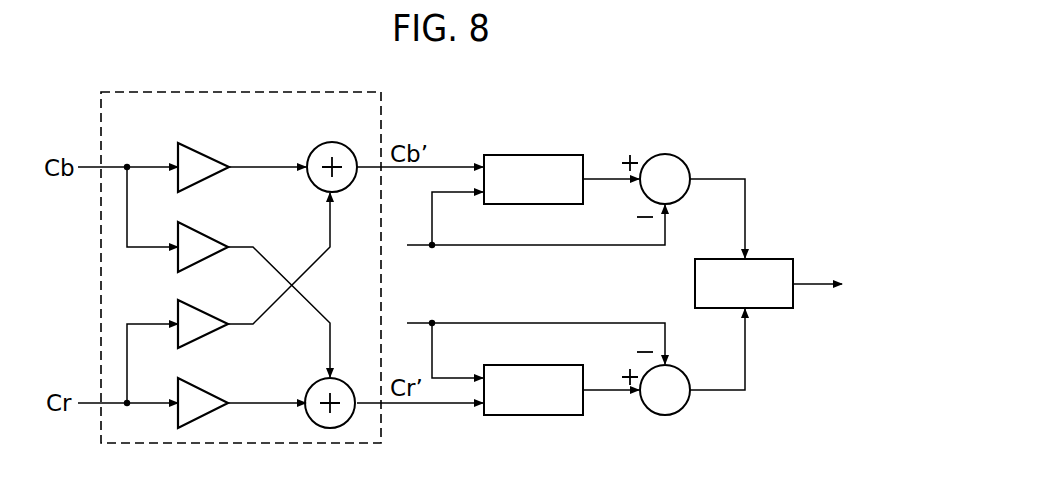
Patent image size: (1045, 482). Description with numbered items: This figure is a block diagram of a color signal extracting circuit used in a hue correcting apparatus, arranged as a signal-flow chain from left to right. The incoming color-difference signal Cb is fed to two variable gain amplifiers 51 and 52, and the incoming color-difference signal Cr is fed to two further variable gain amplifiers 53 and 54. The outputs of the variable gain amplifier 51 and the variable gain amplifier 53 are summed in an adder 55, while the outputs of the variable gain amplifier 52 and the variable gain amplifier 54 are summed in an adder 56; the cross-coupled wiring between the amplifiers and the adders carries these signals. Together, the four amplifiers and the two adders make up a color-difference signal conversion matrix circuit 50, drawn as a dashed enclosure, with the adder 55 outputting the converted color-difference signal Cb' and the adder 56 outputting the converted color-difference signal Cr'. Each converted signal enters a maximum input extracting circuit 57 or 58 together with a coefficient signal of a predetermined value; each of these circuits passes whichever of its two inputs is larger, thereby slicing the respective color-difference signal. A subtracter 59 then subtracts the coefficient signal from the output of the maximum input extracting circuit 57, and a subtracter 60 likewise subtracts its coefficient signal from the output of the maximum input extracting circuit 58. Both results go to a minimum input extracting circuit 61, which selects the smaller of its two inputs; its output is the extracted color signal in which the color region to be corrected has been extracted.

The color-difference signal conversion matrix circuit 50 is at (153, 91).
The variable gain amplifier 51 is at (204, 152).
The variable gain amplifier 52 is at (204, 232).
The variable gain amplifier 53 is at (204, 310).
The variable gain amplifier 54 is at (204, 388).
The adder 55 is at (312, 146).
The adder 56 is at (312, 385).
The maximum input extracting circuit 57 is at (532, 154).
The maximum input extracting circuit 58 is at (533, 416).
The subtracter 59 is at (678, 157).
The subtracter 60 is at (678, 412).
The minimum input extracting circuit 61 is at (776, 258).